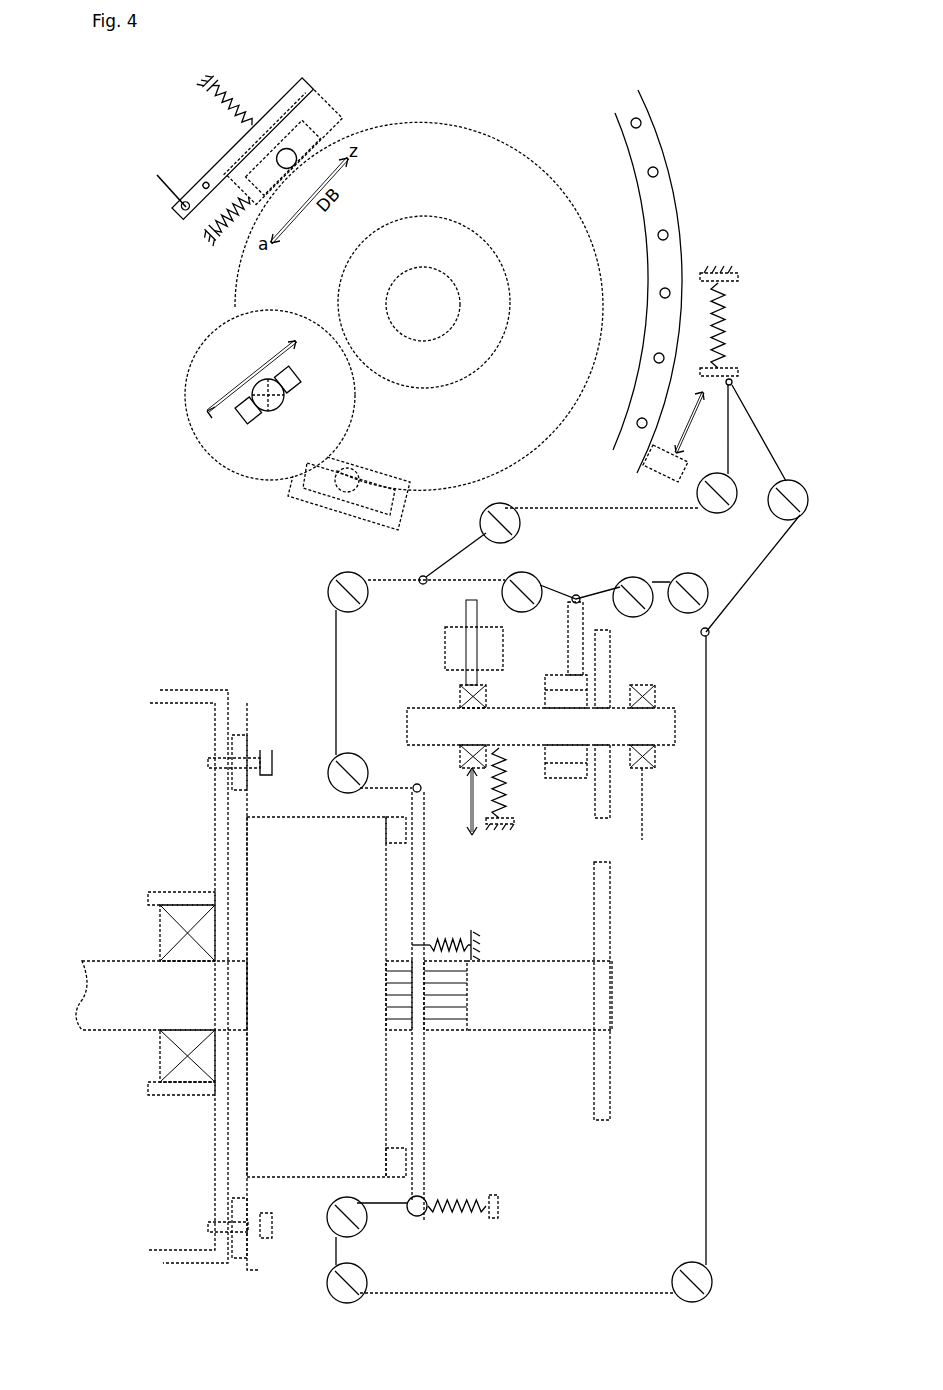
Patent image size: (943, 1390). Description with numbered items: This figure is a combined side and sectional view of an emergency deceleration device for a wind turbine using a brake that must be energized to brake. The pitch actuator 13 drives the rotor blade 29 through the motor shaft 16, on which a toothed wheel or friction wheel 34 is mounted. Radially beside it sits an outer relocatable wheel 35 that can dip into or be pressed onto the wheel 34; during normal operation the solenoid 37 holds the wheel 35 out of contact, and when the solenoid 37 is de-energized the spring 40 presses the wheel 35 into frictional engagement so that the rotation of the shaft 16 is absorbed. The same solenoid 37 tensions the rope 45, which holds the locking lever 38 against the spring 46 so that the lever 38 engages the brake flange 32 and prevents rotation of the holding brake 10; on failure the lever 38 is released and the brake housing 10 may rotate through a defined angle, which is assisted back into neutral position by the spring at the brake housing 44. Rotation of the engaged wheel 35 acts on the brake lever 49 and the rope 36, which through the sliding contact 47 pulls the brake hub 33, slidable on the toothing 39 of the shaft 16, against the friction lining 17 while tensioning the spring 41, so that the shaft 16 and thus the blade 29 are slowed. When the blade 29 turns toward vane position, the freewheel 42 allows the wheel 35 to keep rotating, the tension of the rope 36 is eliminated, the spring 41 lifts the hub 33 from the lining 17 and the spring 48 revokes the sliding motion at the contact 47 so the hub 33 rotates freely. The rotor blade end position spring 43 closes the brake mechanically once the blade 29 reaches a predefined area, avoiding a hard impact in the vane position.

The holding brake 10 is at (250, 288).
The actuator 13 is at (220, 828).
The motor shaft 16 is at (422, 292).
The friction lining 17 is at (396, 1165).
The rotor blade 29 is at (655, 218).
The brake flange 32 is at (332, 502).
The brake hub 33 is at (415, 878).
The toothed wheel or friction wheel 34 is at (457, 243).
The outer relocatable wheel 35 is at (222, 455).
The rope 36 is at (706, 950).
The solenoid 37 is at (460, 645).
The locking lever 38 is at (318, 98).
The toothing 39 is at (451, 1025).
The spring 40 is at (504, 796).
The spring 41 is at (455, 937).
The freewheel 42 is at (565, 760).
The rotor blade end position spring 43 is at (722, 308).
The spring at brake housing 44 is at (218, 222).
The rope 45 is at (168, 185).
The spring 46 is at (235, 112).
The sliding contact 47 is at (418, 1215).
The spring 48 is at (470, 1213).
The brake lever 49 is at (576, 667).